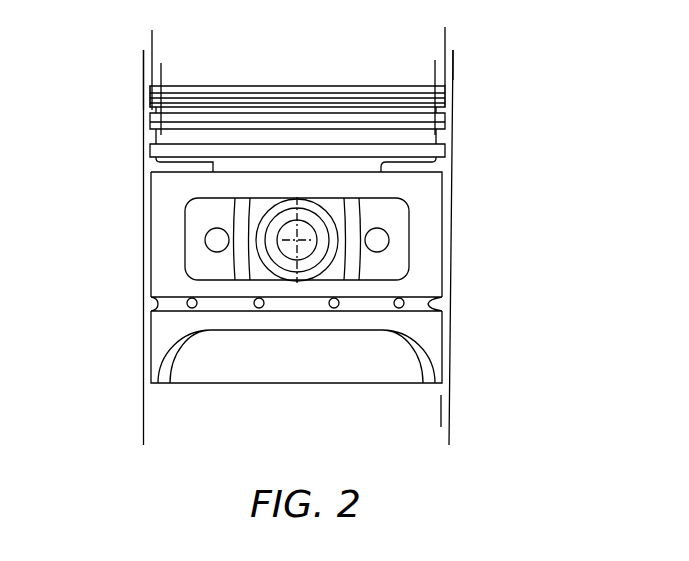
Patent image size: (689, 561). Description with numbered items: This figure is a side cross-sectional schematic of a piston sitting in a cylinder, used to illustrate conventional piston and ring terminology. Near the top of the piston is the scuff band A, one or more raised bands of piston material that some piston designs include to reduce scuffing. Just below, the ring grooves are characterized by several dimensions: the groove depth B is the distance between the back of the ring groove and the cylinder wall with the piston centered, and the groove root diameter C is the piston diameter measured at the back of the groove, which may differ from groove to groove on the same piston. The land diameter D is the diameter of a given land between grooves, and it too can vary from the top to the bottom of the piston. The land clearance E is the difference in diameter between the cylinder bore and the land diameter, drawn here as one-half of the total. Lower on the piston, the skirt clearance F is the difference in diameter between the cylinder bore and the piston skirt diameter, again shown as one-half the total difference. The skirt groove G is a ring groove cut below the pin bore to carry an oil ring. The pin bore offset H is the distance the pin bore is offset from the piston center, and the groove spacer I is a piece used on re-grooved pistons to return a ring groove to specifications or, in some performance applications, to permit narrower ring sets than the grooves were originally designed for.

The scuff band A is at (150, 100).
The groove depth B is at (161, 81).
The groove root diameter C is at (435, 68).
The land diameter D is at (445, 39).
The land clearance E is at (413, 53).
The skirt clearance F is at (448, 413).
The skirt groove G is at (156, 302).
The pin bore offset H is at (284, 240).
The groove spacer I is at (183, 113).